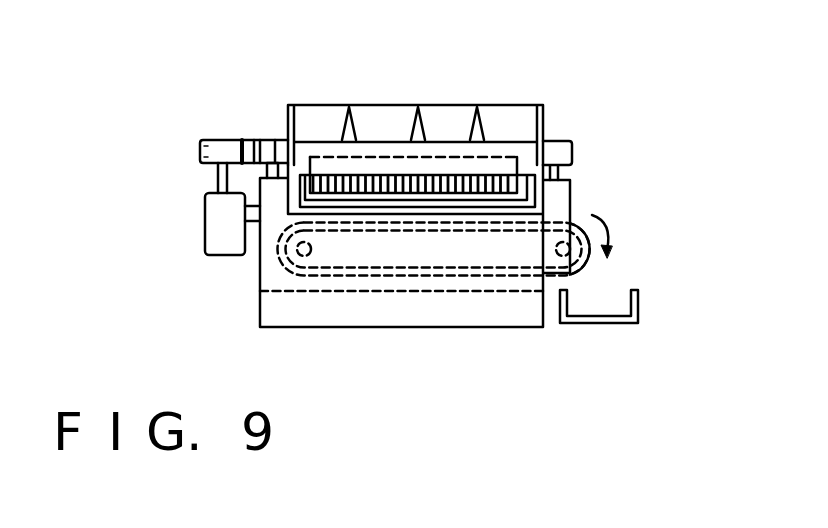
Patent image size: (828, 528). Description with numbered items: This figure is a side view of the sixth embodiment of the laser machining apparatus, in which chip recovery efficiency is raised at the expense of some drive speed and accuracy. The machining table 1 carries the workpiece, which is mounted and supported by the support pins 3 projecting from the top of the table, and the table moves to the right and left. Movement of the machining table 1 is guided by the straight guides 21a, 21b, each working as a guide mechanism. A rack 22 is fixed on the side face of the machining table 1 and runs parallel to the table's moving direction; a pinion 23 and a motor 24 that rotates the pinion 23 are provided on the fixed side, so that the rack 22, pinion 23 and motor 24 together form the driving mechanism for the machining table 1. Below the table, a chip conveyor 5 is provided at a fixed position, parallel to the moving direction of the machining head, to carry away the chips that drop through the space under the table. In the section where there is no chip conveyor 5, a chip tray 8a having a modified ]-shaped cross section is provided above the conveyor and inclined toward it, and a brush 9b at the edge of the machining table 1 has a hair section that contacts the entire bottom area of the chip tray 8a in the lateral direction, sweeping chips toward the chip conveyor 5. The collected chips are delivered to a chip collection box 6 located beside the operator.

The machining table 1 is at (546, 127).
The support pins 3 is at (427, 138).
The chip conveyor 5 is at (390, 271).
The chip collection box 6 is at (638, 303).
The chip tray 8a is at (490, 208).
The brush 9b is at (452, 170).
The straight guide 21a is at (273, 140).
The straight guide 21b is at (558, 175).
The rack 22 is at (257, 140).
The pinion 23 is at (227, 140).
The motor 24 is at (222, 232).